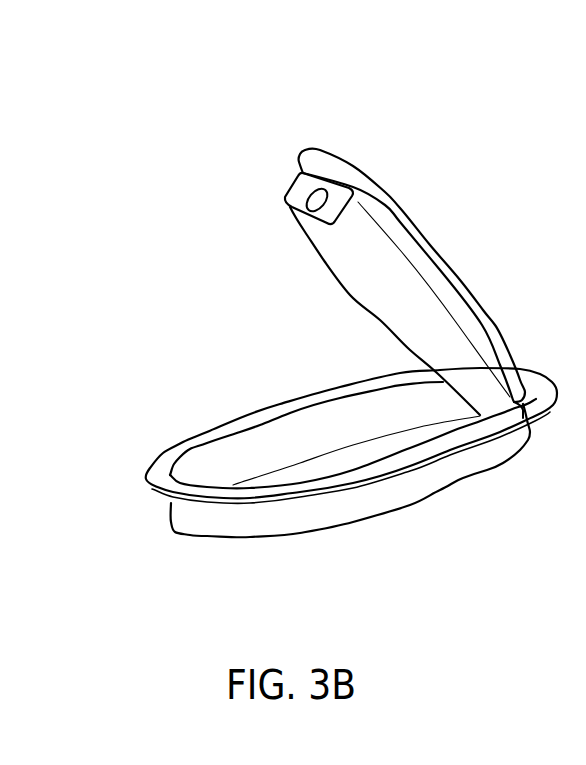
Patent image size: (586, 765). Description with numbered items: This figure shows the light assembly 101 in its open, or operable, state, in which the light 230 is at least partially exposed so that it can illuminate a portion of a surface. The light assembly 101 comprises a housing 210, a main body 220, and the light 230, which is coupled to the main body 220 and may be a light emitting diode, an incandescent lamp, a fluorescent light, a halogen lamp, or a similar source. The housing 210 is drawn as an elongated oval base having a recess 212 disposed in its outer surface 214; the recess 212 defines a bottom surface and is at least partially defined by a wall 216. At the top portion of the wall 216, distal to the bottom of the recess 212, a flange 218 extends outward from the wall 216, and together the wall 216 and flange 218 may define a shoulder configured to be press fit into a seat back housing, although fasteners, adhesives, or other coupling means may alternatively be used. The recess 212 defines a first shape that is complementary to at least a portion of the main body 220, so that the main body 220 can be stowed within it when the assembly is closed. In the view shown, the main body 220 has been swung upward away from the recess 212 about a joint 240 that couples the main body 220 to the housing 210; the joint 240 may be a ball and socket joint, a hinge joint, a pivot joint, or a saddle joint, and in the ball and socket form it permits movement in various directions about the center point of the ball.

The light assembly 101 is at (183, 111).
The housing 210 is at (160, 482).
The recess 212 is at (360, 452).
The outer surface 214 is at (240, 423).
The wall 216 is at (462, 467).
The flange 218 is at (183, 444).
The main body 220 is at (350, 282).
The light 230 is at (285, 198).
The joint 240 is at (535, 425).